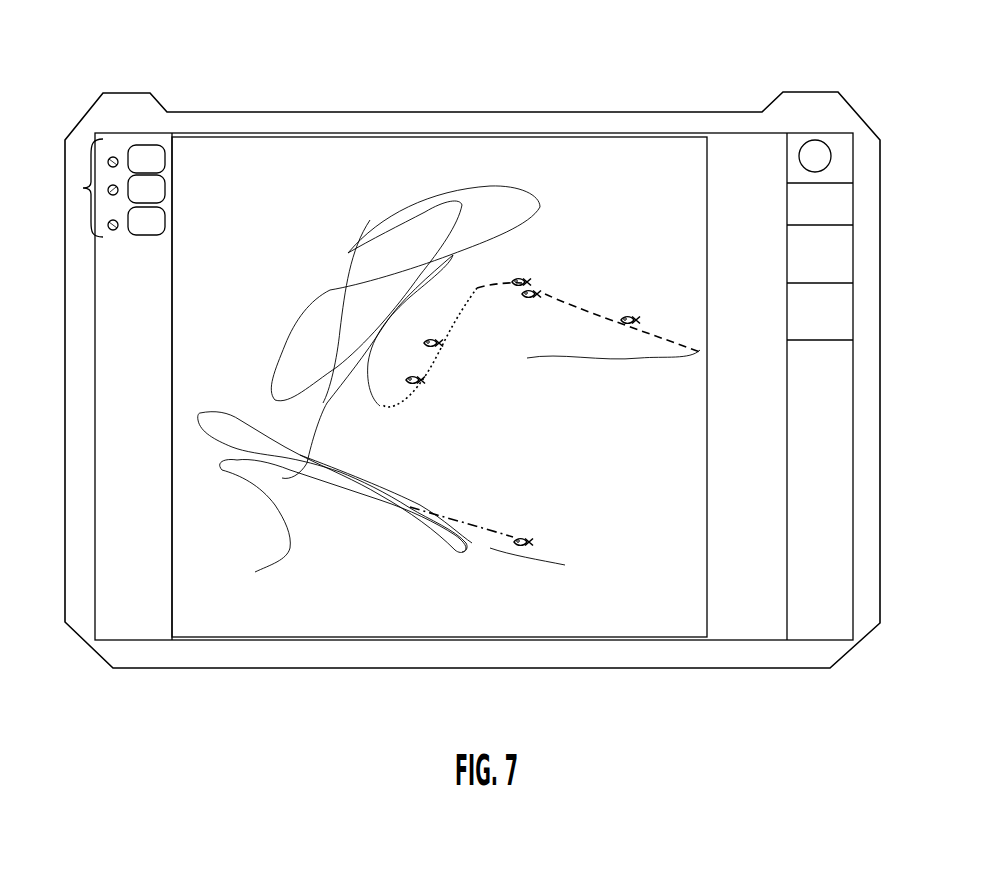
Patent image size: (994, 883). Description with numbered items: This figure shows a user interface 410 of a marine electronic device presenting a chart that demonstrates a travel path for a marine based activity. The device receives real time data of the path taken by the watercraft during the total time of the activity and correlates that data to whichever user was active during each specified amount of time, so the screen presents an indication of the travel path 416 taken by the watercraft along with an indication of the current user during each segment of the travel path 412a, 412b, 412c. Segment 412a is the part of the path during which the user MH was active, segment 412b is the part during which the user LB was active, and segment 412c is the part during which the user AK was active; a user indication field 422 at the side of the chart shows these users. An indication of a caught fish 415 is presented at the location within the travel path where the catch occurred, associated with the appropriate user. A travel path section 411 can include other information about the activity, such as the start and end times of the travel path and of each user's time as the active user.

The user interface 410 is at (292, 96).
The travel path section 411 is at (853, 310).
The segment of the travel path 412a is at (585, 310).
The segment of the travel path 412b is at (490, 533).
The segment of the travel path 412c is at (450, 318).
The indication of a caught fish 415 is at (545, 291).
The indication of the travel path 416 is at (413, 192).
The user selection buttons 422 is at (83, 188).